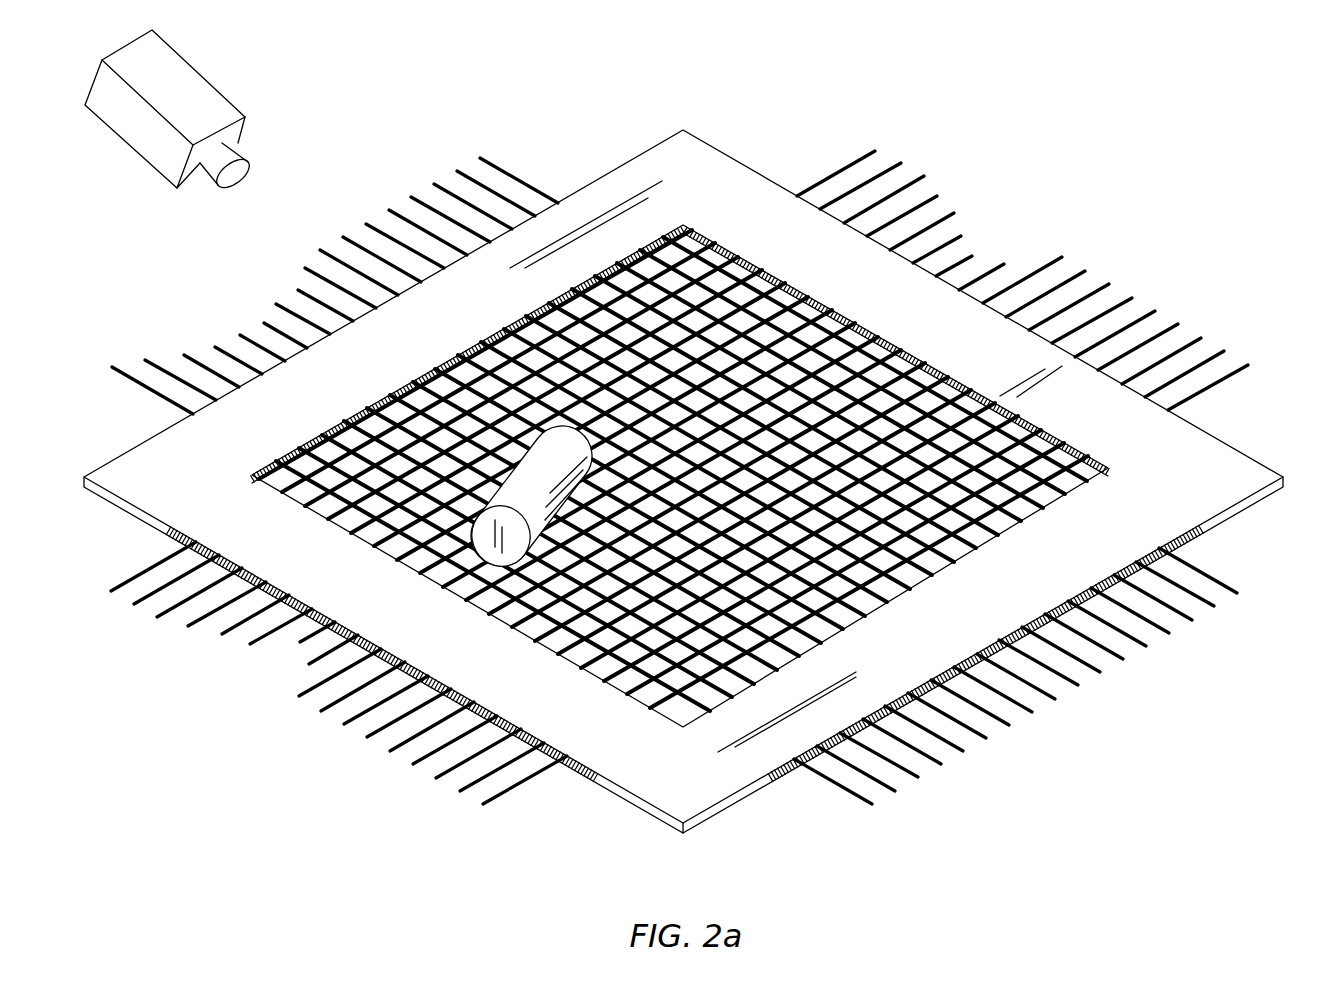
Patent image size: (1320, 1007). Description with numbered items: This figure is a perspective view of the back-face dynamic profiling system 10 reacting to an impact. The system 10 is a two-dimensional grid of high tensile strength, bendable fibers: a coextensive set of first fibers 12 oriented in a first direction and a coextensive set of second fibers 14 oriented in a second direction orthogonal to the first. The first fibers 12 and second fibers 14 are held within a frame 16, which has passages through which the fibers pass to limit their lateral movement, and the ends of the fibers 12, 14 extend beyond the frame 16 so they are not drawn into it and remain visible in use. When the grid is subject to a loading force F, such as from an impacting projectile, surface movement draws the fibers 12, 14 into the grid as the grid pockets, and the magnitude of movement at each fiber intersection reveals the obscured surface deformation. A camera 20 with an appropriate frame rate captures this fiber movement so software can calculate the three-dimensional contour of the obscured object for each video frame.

The back-face dynamic profiling system 10 is at (702, 487).
The first fibers 12 is at (1233, 583).
The second fibers 14 is at (868, 152).
The frame 16 is at (1248, 459).
The camera 20 is at (207, 90).
The loading force F is at (537, 478).